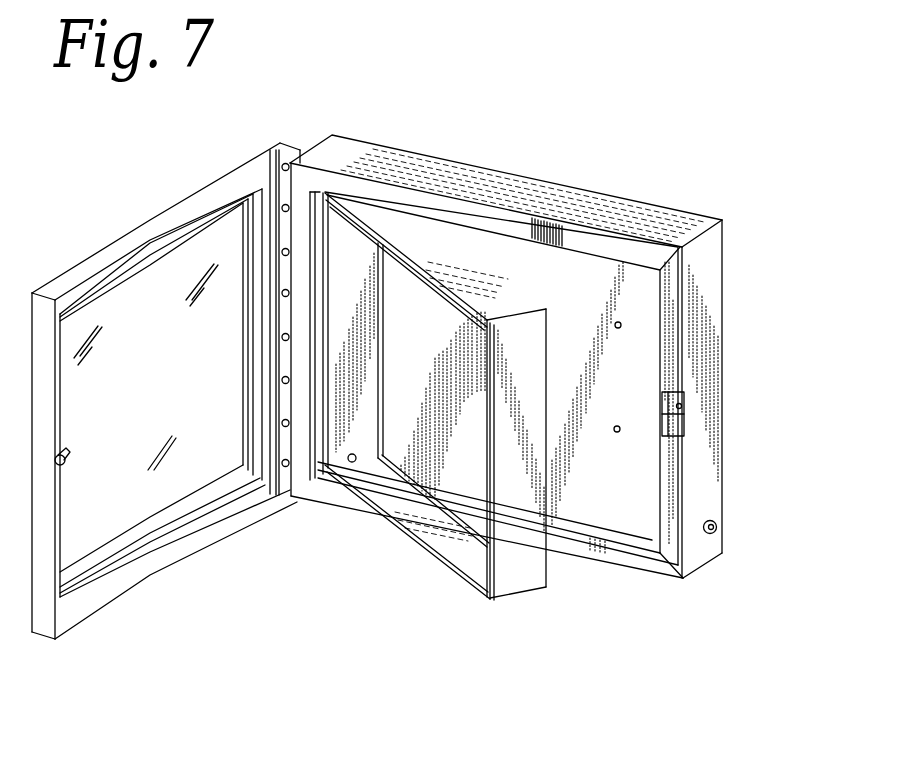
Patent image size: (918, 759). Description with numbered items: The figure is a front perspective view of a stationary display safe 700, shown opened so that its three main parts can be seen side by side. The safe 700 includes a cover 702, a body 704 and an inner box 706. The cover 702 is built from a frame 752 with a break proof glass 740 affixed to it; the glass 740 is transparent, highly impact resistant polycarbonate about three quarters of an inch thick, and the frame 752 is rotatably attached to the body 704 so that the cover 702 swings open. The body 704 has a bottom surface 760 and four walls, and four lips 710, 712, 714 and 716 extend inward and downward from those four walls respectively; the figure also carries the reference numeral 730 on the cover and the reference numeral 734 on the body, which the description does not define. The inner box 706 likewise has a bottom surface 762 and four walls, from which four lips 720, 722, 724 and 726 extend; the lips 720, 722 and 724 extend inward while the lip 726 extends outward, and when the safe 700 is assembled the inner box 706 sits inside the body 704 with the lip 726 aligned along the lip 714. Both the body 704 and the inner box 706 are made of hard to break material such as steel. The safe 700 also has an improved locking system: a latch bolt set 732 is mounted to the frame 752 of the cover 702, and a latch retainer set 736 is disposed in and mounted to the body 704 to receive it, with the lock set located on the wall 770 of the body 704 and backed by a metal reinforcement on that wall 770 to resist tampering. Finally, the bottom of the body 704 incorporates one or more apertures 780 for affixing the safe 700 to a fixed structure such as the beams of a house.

The stationary safe 700 is at (711, 98).
The cover 702 is at (43, 633).
The body 704 is at (390, 166).
The inner box 706 is at (532, 580).
The lip 710 is at (302, 202).
The lip 712 is at (612, 247).
The lip 714 is at (672, 308).
The lip 716 is at (638, 558).
The lip 720 is at (320, 457).
The lip 722 is at (445, 295).
The lip 724 is at (450, 570).
The lip 726 is at (427, 468).
The first door bottom rail 730 is at (172, 515).
The latch bolt set 732 is at (68, 452).
The lock 734 is at (716, 527).
The latch retainer set 736 is at (686, 413).
The break proof glass 740 is at (152, 293).
The frame 752 is at (177, 217).
The bottom surface 760 is at (593, 497).
The bottom surface 762 is at (380, 448).
The wall 770 is at (705, 478).
The apertures 780 is at (621, 326).